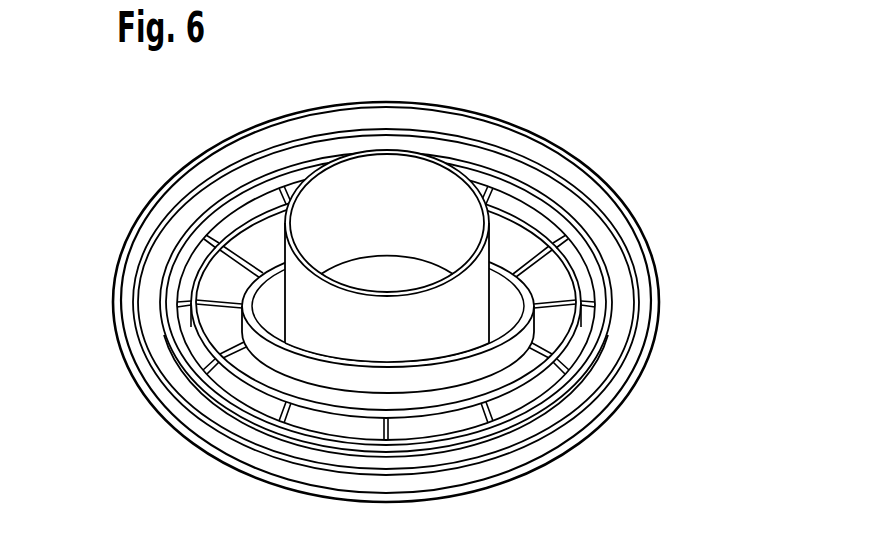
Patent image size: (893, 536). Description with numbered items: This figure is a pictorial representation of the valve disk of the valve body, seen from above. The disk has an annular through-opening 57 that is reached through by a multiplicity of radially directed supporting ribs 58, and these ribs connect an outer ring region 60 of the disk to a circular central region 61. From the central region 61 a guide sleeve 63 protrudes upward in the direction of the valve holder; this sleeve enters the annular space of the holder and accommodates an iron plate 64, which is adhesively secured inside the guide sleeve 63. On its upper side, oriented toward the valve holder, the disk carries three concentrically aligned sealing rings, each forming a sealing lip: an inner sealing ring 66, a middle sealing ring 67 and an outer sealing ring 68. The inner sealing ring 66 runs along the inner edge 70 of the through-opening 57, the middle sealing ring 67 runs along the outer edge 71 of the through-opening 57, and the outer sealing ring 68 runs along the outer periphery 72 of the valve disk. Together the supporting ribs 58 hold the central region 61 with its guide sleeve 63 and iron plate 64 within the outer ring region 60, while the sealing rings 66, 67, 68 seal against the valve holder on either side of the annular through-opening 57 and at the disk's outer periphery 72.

The annular through-opening 57 is at (500, 398).
The supporting ribs 58 is at (207, 303).
The outer ring region 60 is at (168, 357).
The central region 61 is at (313, 365).
The guide sleeve 63 is at (410, 157).
The iron plate 64 is at (400, 272).
The inner sealing ring 66 is at (572, 222).
The middle sealing ring 67 is at (567, 227).
The outer sealing ring 68 is at (647, 283).
The inner edge 70 is at (553, 363).
The outer edge 71 is at (575, 258).
The outer periphery 72 is at (655, 341).